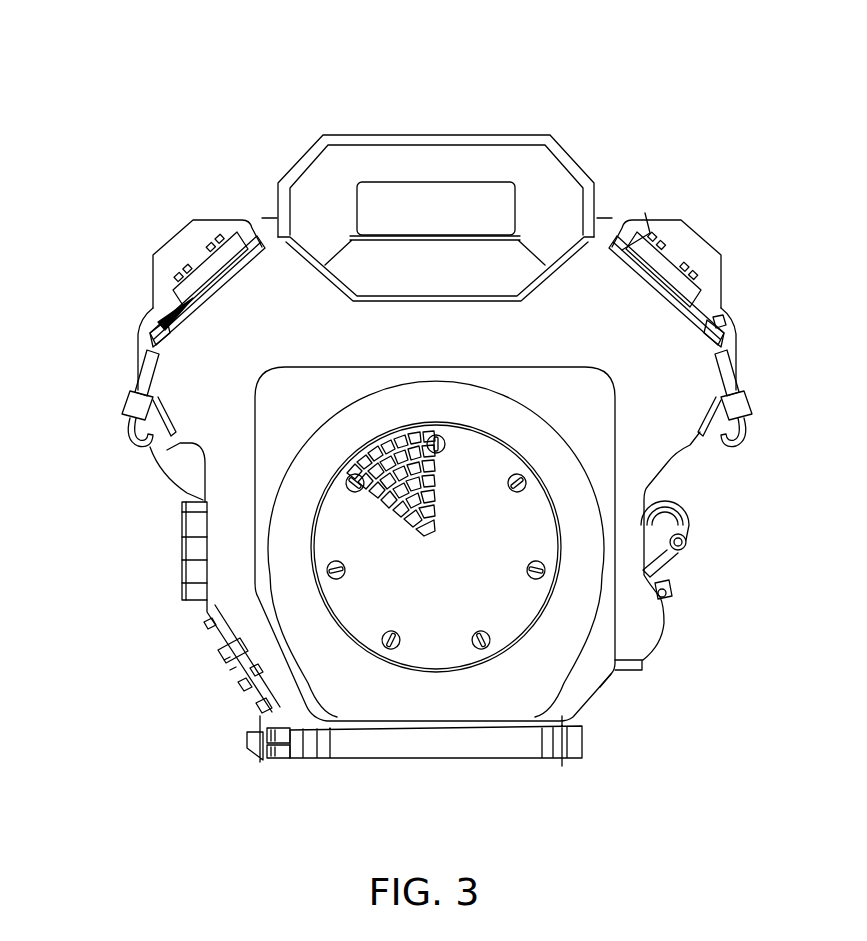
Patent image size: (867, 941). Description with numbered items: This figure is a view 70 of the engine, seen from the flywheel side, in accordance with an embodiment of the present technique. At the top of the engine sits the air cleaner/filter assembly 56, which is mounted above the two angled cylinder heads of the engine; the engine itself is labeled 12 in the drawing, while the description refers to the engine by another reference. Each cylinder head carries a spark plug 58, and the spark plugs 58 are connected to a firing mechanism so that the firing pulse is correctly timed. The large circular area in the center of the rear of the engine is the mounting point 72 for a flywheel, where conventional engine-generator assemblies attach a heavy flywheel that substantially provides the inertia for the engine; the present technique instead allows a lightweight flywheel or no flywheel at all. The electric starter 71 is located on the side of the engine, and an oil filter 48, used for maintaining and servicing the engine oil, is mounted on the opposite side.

The front view 70 is at (346, 88).
The air cleaner/filter assembly 56 is at (458, 133).
The cylinder head 12 is at (283, 262).
The mounting point 72 is at (470, 472).
The spark plugs 58 is at (150, 372).
The electric starter 71 is at (690, 493).
The oil filter 48 is at (182, 532).